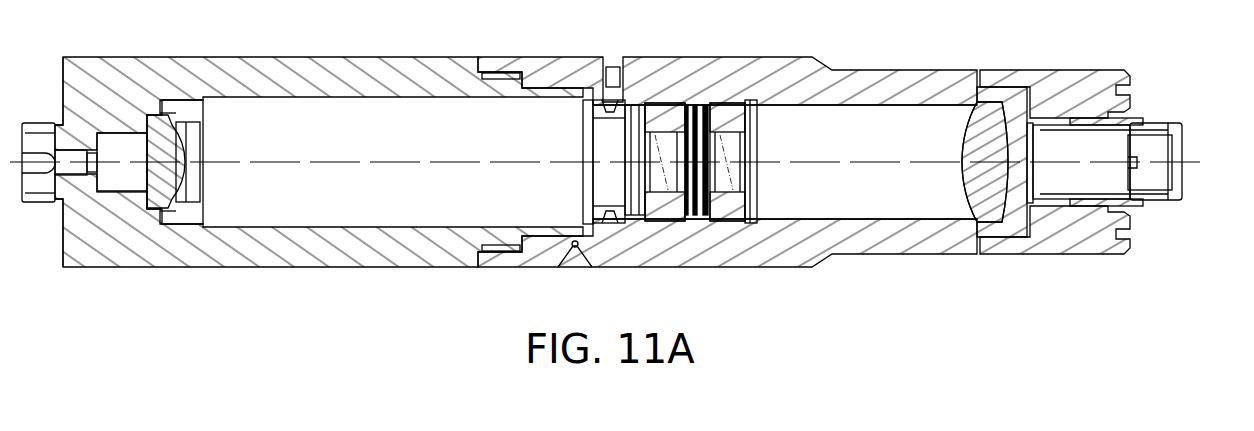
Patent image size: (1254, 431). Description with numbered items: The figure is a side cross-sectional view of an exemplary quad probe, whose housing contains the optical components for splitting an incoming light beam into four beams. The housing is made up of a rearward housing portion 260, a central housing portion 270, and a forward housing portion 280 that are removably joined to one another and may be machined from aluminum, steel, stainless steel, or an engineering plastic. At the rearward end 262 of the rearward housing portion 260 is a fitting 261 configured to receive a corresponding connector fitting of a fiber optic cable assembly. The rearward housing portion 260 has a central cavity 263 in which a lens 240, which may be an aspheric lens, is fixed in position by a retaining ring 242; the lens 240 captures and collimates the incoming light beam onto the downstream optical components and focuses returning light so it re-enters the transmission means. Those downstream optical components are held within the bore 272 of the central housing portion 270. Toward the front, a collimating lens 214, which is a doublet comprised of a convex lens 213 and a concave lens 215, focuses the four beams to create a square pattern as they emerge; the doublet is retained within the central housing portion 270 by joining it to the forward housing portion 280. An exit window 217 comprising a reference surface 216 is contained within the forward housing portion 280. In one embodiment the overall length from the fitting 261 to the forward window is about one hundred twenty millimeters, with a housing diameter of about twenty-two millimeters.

The convex lens 213 is at (975, 123).
The collimating lens 214 is at (950, 187).
The concave lens 215 is at (1010, 123).
The reference surface 216 is at (1182, 172).
The exit window 217 is at (1172, 140).
The lens 240 is at (153, 198).
The retaining ring 242 is at (185, 208).
The rearward housing portion 260 is at (258, 268).
The fitting 261 is at (38, 208).
The rearward end 262 is at (63, 88).
The central cavity 263 is at (125, 145).
The central housing portion 270 is at (902, 254).
The bore 272 is at (787, 118).
The forward housing portion 280 is at (1067, 254).